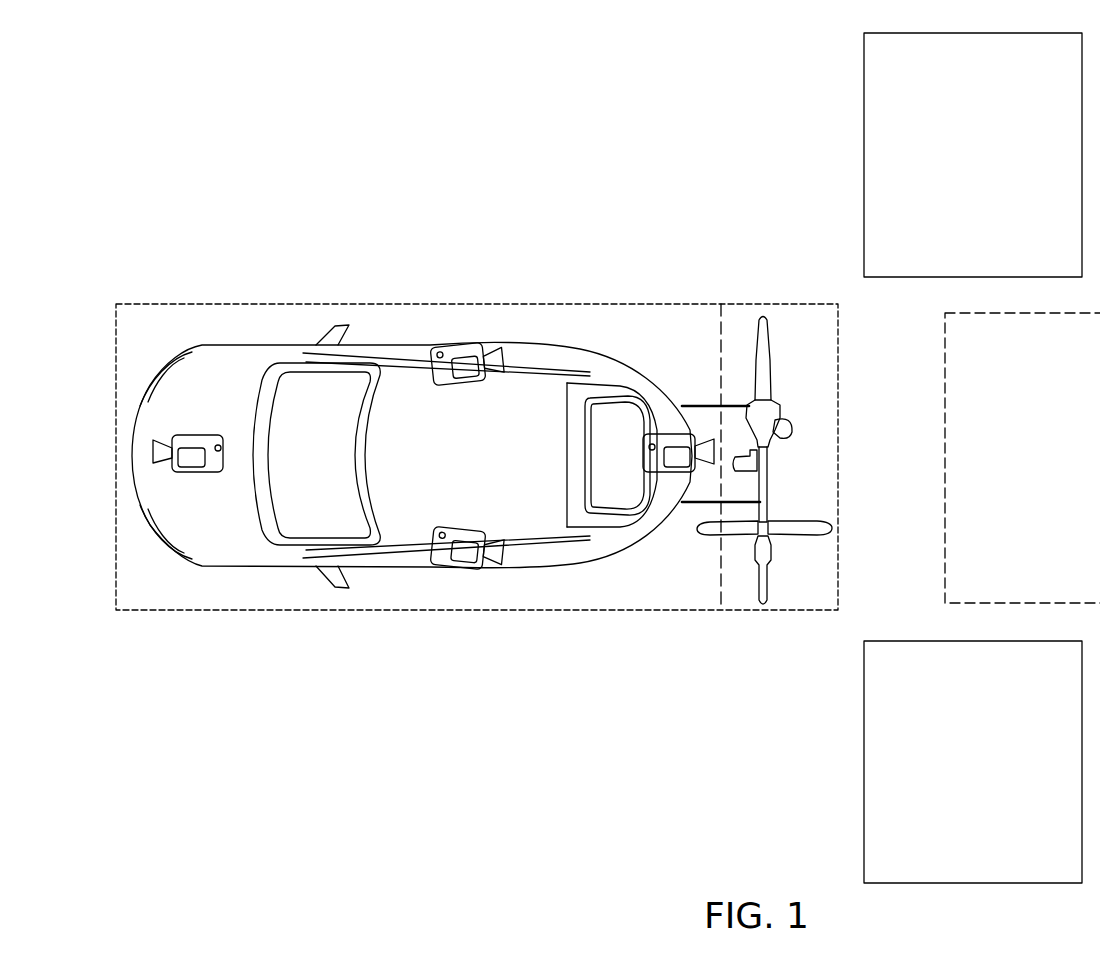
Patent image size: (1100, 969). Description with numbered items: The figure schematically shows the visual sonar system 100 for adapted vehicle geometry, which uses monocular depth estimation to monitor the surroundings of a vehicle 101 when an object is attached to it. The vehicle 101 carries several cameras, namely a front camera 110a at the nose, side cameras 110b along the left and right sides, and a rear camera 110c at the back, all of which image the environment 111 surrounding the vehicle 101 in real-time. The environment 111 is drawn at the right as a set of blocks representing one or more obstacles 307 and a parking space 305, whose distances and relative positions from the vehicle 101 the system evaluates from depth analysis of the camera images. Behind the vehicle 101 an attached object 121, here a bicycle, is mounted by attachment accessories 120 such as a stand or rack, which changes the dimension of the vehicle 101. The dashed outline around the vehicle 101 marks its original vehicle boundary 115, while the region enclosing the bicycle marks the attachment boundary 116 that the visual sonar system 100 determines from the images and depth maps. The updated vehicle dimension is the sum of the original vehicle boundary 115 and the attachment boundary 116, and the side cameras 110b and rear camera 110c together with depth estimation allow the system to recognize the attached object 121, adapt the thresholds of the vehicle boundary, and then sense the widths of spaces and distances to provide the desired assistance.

The visual sonar system 100 is at (206, 143).
The vehicle 101 is at (288, 345).
The front camera 110a is at (200, 472).
The side cameras 110b is at (460, 385).
The rear camera 110c is at (642, 463).
The environment 111 is at (832, 217).
The original vehicle boundary 115 is at (168, 304).
The attachment boundary 116 is at (748, 304).
The attachment accessories 120 is at (705, 406).
The attached object 121 is at (773, 370).
The parking space 305 is at (1034, 471).
The obstacle 307 is at (950, 167).